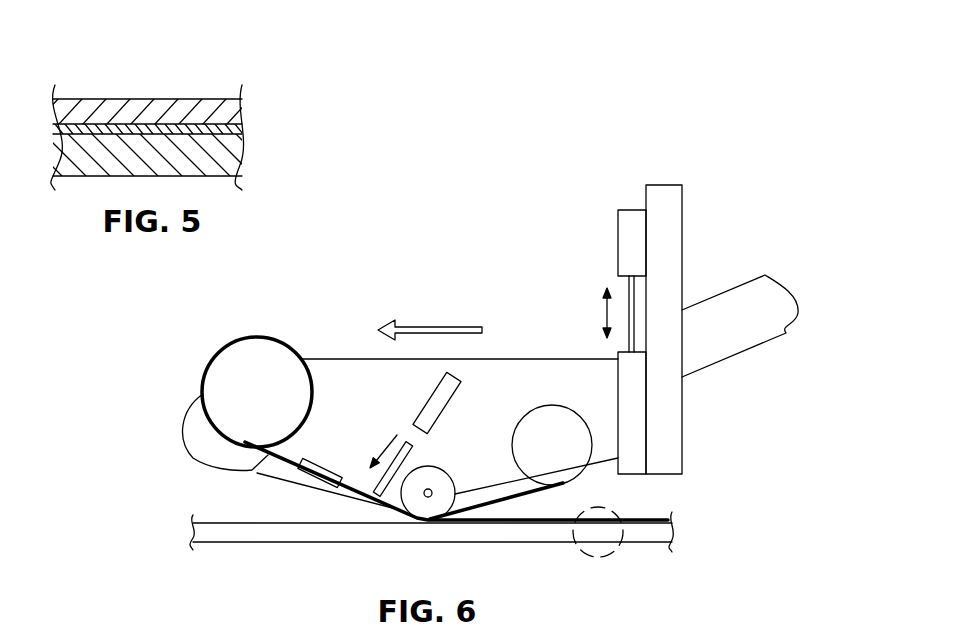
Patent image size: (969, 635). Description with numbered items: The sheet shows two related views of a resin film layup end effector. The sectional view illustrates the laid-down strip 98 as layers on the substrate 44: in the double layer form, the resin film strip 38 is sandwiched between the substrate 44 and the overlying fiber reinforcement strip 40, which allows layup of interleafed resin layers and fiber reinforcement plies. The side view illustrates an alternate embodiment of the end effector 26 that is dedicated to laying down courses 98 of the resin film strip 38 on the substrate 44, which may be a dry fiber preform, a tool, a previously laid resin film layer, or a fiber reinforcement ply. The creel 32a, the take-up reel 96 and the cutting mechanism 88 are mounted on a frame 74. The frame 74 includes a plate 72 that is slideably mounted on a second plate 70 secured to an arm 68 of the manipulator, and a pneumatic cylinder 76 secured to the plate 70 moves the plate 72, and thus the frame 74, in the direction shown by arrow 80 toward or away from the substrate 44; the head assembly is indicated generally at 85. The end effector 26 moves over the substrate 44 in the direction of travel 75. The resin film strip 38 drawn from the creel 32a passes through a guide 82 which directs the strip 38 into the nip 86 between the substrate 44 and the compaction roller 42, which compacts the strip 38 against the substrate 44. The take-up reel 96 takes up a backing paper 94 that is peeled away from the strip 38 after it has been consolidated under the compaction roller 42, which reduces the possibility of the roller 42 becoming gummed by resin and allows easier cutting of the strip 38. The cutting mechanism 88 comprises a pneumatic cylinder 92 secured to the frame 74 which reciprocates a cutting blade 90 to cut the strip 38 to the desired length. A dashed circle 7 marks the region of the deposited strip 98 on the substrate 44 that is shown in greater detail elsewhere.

In FIG. 6, the detail region of FIG. 7 is at (612, 548).
In FIG. 6, the end effector 26 is at (496, 262).
In FIG. 6, the creel 32a is at (248, 380).
In FIG. 5, the resin film strip 38 is at (210, 128).
In FIG. 6, the resin film strip 38 is at (257, 473).
In FIG. 5, the fiber reinforcement strip 40 is at (93, 110).
In FIG. 6, the compaction roller 42 is at (440, 490).
In FIG. 5, the substrate 44 is at (213, 157).
In FIG. 6, the substrate 44 is at (247, 532).
In FIG. 6, the arm 68 is at (747, 333).
In FIG. 6, the second plate 70 is at (663, 205).
In FIG. 6, the plate 72 is at (630, 448).
In FIG. 6, the frame 74 is at (197, 430).
In FIG. 6, the direction of travel 75 is at (440, 327).
In FIG. 6, the pneumatic cylinder 76 is at (630, 233).
In FIG. 6, the arrow 80 is at (603, 312).
In FIG. 6, the guide 82 is at (320, 467).
In FIG. 6, the head assembly 85 is at (619, 172).
In FIG. 6, the nip 86 is at (376, 511).
In FIG. 6, the cutting mechanism 88 is at (397, 408).
In FIG. 6, the cutting blade 90 is at (415, 457).
In FIG. 6, the pneumatic cylinder 92 is at (438, 400).
In FIG. 6, the backing paper 94 is at (503, 500).
In FIG. 6, the take-up reel 96 is at (552, 423).
In FIG. 5, the strip 98 is at (168, 90).
In FIG. 6, the strip 98 is at (647, 517).